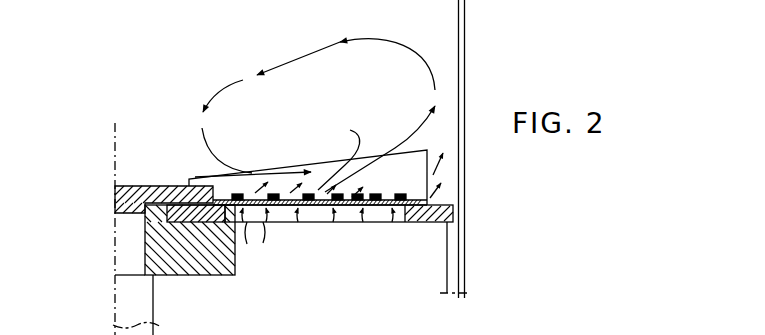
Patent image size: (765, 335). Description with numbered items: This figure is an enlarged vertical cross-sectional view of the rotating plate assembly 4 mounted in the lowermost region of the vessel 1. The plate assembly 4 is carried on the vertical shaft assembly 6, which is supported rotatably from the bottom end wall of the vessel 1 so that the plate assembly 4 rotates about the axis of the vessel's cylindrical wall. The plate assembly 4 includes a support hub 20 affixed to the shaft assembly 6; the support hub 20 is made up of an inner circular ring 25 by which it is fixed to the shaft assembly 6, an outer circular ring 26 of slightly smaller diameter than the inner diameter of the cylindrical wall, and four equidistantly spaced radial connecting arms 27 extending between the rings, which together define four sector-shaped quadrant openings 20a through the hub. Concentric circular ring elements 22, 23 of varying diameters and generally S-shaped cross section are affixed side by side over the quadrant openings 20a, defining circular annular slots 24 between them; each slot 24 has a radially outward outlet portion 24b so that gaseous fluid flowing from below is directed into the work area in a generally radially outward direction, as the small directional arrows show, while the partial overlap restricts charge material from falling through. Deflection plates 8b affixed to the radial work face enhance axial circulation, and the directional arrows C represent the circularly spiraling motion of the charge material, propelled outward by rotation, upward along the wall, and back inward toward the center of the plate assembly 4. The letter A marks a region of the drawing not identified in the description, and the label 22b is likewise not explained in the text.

The vessel 1 is at (458, 254).
The circular plate assembly 4 is at (373, 226).
The vertical shaft assembly 6 is at (190, 258).
The deflection plates 8b is at (272, 172).
The support hub 20 is at (432, 224).
The quadrant openings 20a is at (388, 222).
The circular ring element 22 is at (374, 194).
The electrode end 22b is at (404, 194).
The circular ring element 23 is at (362, 178).
The circular annular slots 24 is at (322, 165).
The radially outward outlet portion 24b is at (337, 157).
The inner circular ring 25 is at (238, 240).
The outer circular ring 26 is at (456, 213).
The radial connecting arms 27 is at (318, 222).
The toner layer A is at (332, 222).
The directional arrows C is at (318, 109).